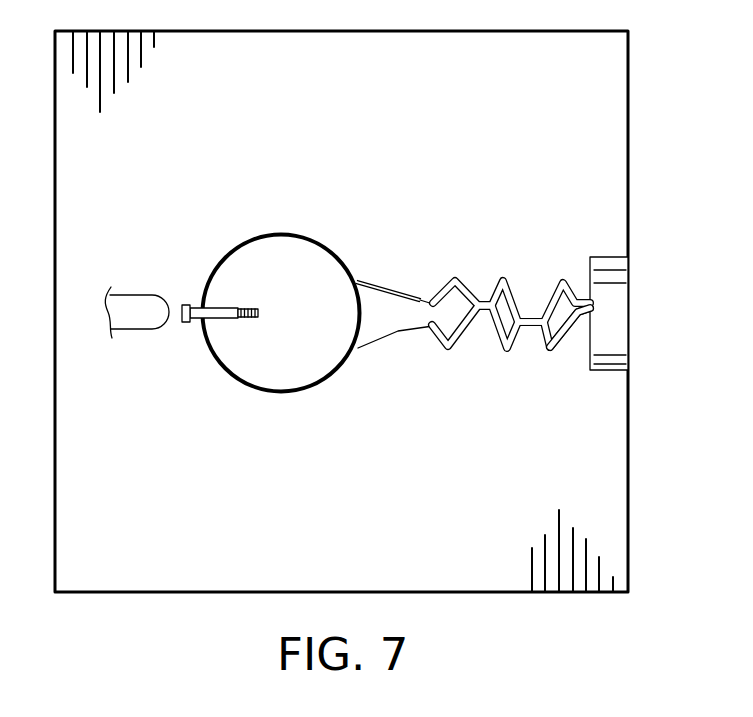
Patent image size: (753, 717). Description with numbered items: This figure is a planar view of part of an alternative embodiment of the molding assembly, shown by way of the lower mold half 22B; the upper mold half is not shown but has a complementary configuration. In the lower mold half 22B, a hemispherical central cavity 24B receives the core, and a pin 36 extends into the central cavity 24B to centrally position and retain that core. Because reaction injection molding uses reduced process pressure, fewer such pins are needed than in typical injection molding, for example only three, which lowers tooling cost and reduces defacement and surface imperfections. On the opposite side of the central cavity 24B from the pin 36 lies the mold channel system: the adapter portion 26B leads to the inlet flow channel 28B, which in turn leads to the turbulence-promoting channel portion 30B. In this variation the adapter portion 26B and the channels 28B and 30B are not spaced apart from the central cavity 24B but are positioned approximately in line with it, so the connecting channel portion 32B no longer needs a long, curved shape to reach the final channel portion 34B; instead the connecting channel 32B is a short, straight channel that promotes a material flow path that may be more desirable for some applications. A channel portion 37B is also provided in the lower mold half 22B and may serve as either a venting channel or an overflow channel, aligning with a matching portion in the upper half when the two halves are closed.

The lower mold half 22B is at (628, 73).
The central cavity 24B is at (275, 393).
The adapter portion 26B is at (613, 333).
The inlet flow channel 28B is at (585, 330).
The turbulence-promoting channel portion 30B is at (560, 280).
The connecting channel portion 32B is at (418, 310).
The final channel portion 34B is at (380, 342).
The pin 36 is at (217, 315).
The channel portion 37B is at (137, 305).